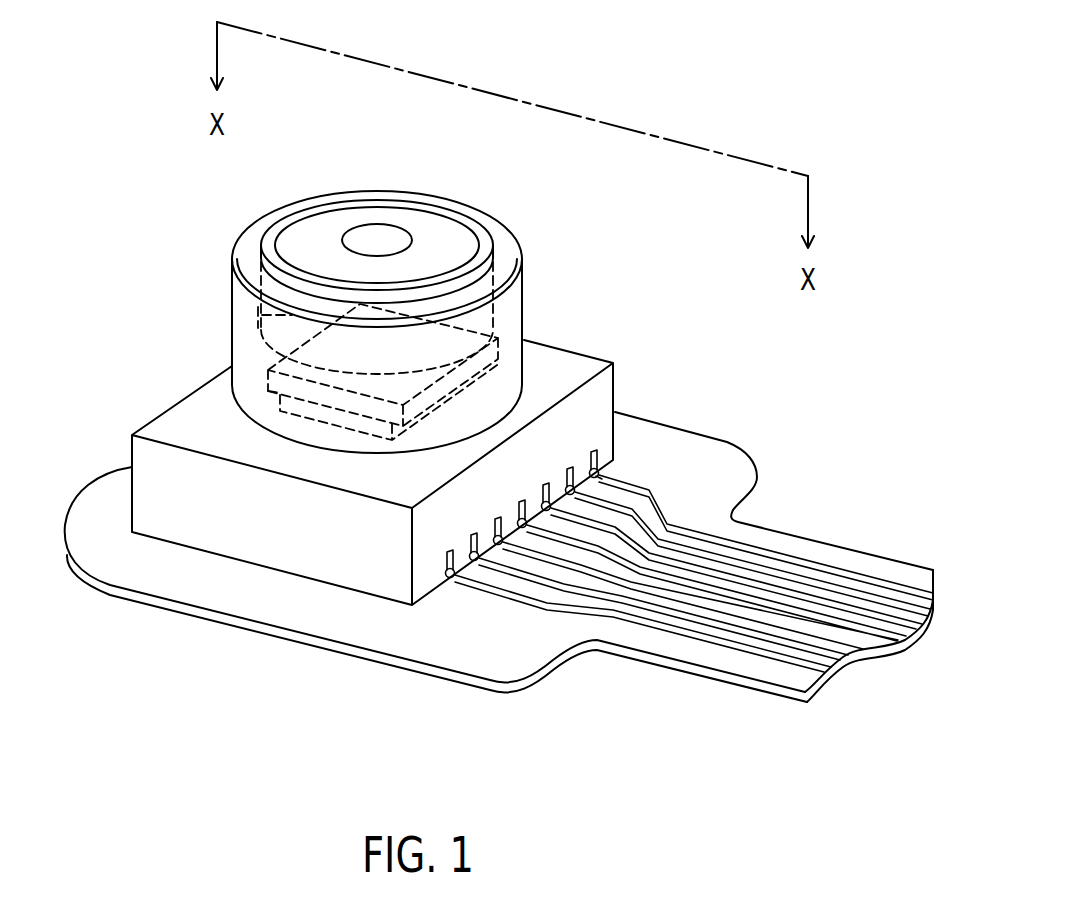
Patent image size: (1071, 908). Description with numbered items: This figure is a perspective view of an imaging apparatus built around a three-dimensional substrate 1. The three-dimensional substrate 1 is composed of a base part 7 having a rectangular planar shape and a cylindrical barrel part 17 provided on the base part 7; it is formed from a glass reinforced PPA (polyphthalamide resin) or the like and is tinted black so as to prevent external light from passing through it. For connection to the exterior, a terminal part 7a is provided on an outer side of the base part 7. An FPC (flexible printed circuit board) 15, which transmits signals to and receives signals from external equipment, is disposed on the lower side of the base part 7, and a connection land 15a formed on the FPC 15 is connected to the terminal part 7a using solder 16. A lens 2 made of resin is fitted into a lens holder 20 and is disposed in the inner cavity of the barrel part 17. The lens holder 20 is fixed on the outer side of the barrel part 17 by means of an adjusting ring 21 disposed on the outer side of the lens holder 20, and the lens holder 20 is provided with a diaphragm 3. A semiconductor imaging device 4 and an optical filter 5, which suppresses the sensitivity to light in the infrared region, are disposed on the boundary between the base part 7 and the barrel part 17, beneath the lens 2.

The three-dimensional substrate 1 is at (118, 370).
The lens 2 is at (380, 242).
The diaphragm 3 is at (410, 228).
The semiconductor imaging device 4 is at (280, 405).
The optical filter 5 is at (265, 380).
The base part 7 is at (217, 493).
The terminal part 7a is at (447, 577).
The FPC (flexible printed circuit board) 15 is at (712, 465).
The connection land 15a is at (477, 587).
The solder 16 is at (600, 477).
The barrel part 17 is at (262, 315).
The lens holder 20 is at (436, 245).
The adjusting ring 21 is at (510, 323).